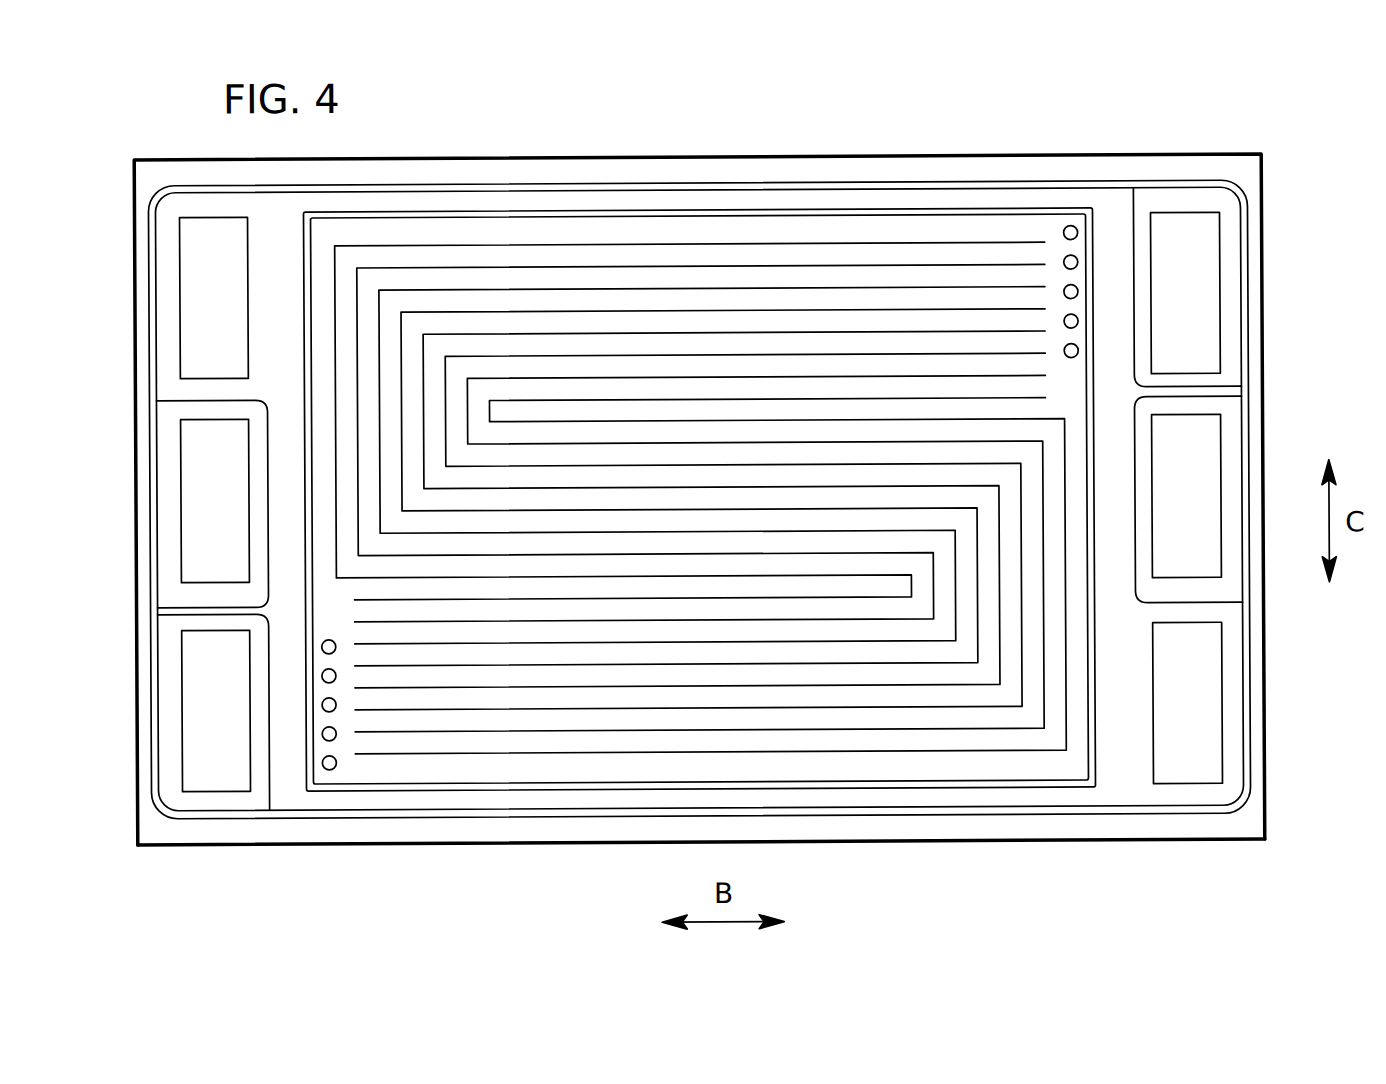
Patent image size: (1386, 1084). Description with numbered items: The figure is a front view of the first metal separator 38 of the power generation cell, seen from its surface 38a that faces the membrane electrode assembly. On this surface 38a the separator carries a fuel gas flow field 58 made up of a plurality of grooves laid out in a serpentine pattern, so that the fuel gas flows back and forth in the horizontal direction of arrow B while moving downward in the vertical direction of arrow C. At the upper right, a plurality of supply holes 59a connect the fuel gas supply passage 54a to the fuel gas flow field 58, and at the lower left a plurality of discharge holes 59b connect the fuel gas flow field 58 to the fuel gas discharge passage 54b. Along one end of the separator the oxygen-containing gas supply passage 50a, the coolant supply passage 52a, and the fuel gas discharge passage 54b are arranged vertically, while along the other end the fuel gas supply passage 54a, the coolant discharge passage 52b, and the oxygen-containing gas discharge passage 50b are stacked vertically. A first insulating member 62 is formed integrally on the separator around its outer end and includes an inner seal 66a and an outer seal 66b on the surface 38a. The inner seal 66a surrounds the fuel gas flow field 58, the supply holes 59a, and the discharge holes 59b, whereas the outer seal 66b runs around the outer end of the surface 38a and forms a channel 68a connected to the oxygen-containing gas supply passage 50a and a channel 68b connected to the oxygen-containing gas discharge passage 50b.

The first metal separator 38 is at (699, 454).
The surface 38a is at (1103, 825).
The oxygen-containing gas supply passage 50a is at (214, 297).
The oxygen-containing gas discharge passage 50b is at (1188, 702).
The coolant supply passage 52a is at (215, 500).
The coolant discharge passage 52b is at (1187, 495).
The fuel gas supply passage 54a is at (1186, 292).
The fuel gas discharge passage 54b is at (216, 710).
The fuel gas flow field 58 is at (504, 277).
The supply holes 59a is at (1079, 323).
The discharge holes 59b is at (321, 645).
The first insulating member 62 is at (958, 149).
The inner seal 66a is at (805, 210).
The outer seal 66b is at (885, 186).
The channel 68a is at (228, 298).
The channel 68b is at (1173, 703).